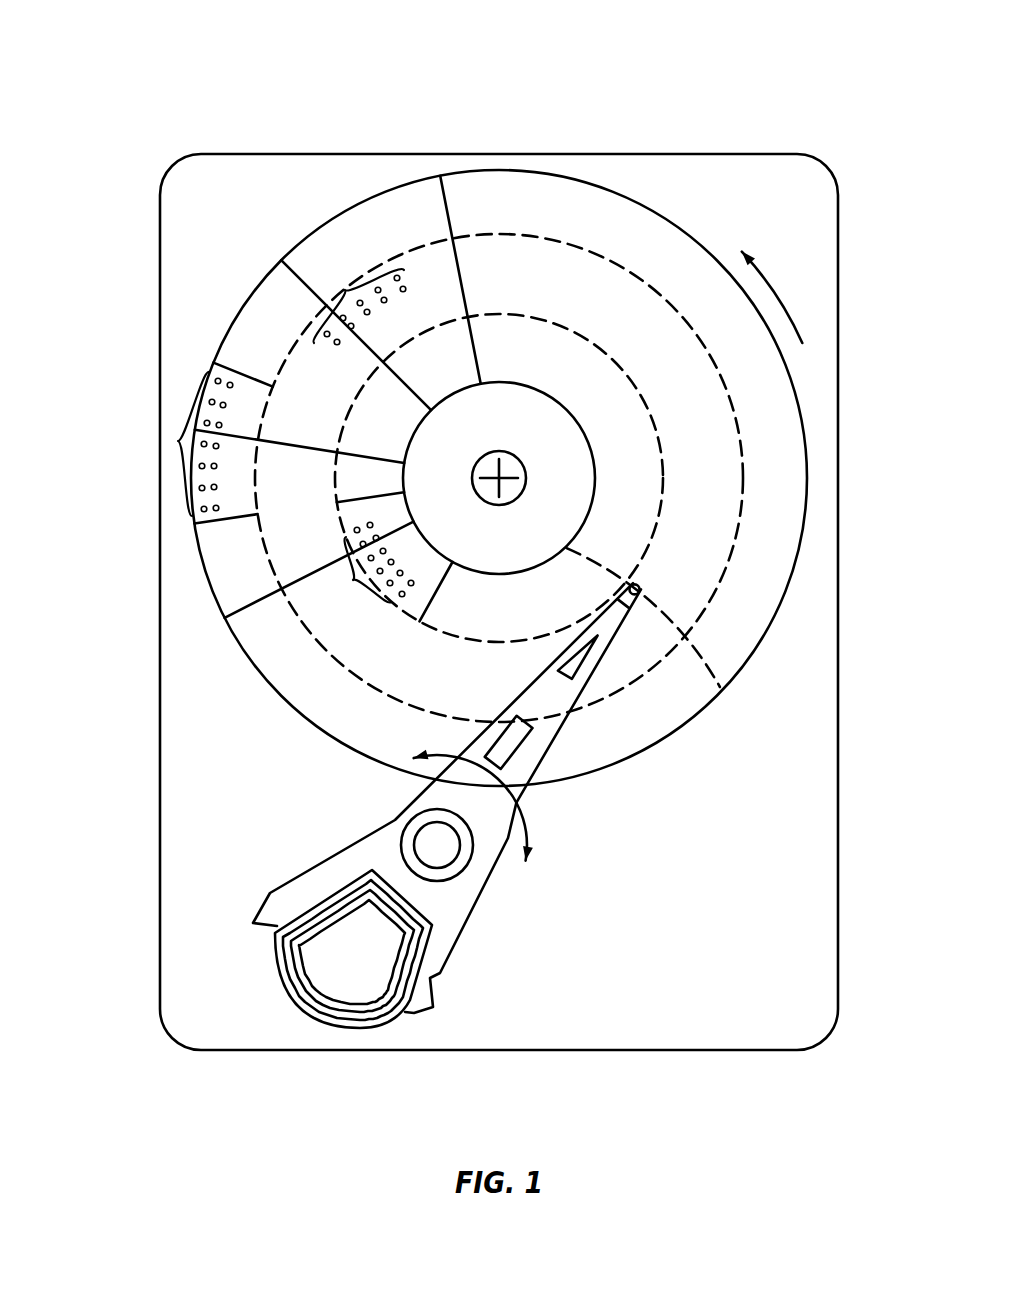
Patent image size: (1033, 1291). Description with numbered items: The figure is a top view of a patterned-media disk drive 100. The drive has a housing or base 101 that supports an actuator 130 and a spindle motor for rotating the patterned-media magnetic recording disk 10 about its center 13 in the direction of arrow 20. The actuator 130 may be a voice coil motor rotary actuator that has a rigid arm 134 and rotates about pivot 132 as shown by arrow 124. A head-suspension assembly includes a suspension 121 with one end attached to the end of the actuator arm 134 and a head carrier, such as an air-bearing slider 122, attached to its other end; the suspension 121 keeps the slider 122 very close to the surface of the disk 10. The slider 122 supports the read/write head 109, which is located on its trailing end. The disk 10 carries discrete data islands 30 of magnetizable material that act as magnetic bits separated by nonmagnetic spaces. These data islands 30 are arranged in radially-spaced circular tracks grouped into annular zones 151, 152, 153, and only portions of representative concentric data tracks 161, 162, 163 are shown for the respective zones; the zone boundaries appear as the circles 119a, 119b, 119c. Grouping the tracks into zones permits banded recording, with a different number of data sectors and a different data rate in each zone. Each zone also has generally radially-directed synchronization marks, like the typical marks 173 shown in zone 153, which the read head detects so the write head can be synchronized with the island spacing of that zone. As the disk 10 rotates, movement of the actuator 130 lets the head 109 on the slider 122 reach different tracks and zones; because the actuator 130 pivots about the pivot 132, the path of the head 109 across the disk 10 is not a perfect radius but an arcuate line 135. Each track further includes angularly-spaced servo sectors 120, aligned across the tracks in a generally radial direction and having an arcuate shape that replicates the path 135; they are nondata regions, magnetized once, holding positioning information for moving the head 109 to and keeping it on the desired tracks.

The patterned-media disk drive 100 is at (166, 69).
The housing or base 101 is at (755, 154).
The patterned-media magnetic recording disk 10 is at (806, 553).
The center of the disk 13 is at (508, 473).
The arrow indicating disk rotation direction 20 is at (770, 274).
The inner zone boundary 119a is at (527, 318).
The middle zone boundary 119b is at (548, 243).
The outer zone boundary 119c is at (650, 218).
The servo sectors 120 is at (443, 218).
The data islands 30 is at (369, 318).
The data track 161 is at (352, 575).
The data track 162 is at (346, 289).
The data track 163 is at (176, 441).
The synchronization marks 173 is at (241, 370).
The annular zone 151 is at (643, 438).
The annular zone 152 is at (718, 462).
The annular zone 153 is at (790, 477).
The read/write head 109 is at (639, 588).
The air-bearing slider 122 is at (668, 618).
The arcuate line 135 is at (720, 688).
The suspension 121 is at (550, 677).
The actuator arm 134 is at (506, 716).
The arrow indicating actuator rotation 124 is at (524, 818).
The pivot 132 is at (428, 840).
The actuator 130 is at (265, 898).